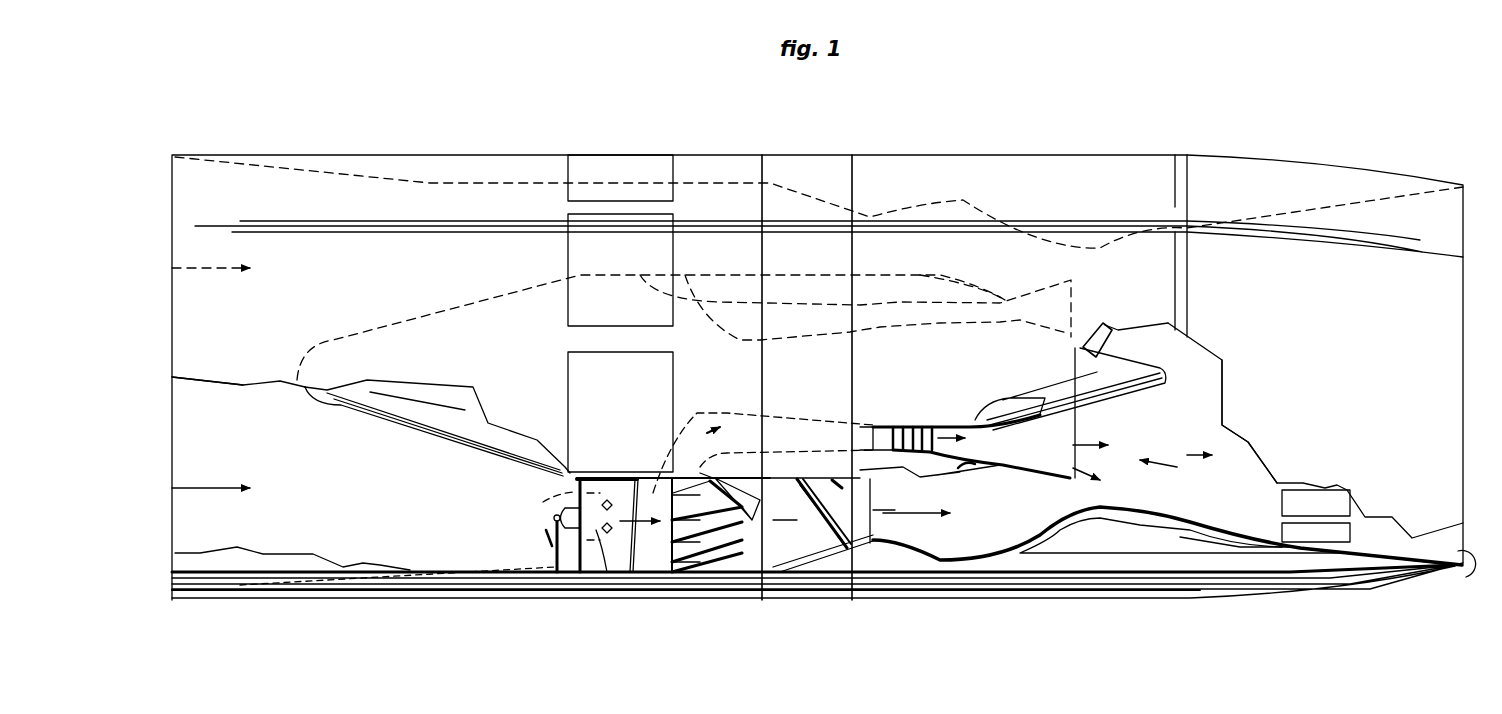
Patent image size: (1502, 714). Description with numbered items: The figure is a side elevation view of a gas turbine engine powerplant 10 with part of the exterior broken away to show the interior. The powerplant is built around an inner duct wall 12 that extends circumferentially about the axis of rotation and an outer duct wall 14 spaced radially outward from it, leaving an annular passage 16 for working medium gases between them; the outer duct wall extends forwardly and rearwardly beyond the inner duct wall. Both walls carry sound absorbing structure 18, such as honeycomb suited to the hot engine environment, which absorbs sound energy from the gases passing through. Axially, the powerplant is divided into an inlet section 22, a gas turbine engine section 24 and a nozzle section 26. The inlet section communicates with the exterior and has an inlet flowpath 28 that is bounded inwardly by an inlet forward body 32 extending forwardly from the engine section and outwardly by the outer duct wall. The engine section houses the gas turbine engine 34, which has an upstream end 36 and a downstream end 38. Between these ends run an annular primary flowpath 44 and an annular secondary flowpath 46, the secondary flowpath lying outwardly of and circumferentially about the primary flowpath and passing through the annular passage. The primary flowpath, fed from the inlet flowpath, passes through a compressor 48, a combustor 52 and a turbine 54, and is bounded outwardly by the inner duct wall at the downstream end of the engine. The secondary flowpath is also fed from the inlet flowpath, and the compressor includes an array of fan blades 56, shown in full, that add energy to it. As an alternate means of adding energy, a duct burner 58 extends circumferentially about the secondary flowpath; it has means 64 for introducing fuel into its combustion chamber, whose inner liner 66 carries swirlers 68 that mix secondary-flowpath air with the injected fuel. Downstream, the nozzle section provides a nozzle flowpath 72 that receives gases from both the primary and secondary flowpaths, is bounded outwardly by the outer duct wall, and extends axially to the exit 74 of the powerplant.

The gas turbine engine powerplant 10 is at (1062, 126).
The inner duct wall 12 is at (907, 480).
The outer duct wall 14 is at (1375, 585).
The annular passage 16 is at (502, 542).
The sound absorbing structure 18 is at (1098, 347).
The inlet section 22 is at (557, 637).
The gas turbine engine section 24 is at (1082, 637).
The nozzle section 26 is at (1455, 637).
The inlet flowpath 28 is at (224, 266).
The inlet forward body 32 is at (365, 418).
The gas turbine engine 34 is at (1180, 470).
The upstream end 36 is at (443, 312).
The downstream end 38 is at (1000, 292).
The primary flowpath 44 is at (687, 422).
The secondary flowpath 46 is at (620, 532).
The compressor 48 is at (705, 387).
The combustor 52 is at (884, 387).
The turbine 54 is at (994, 384).
The fan blades 56 is at (630, 553).
The duct burner 58 is at (547, 548).
The means for introducing fuel 64 is at (560, 514).
The inner liner 66 is at (607, 572).
The swirlers 68 is at (606, 497).
The nozzle flowpath 72 is at (1178, 466).
The exit 74 is at (1470, 577).